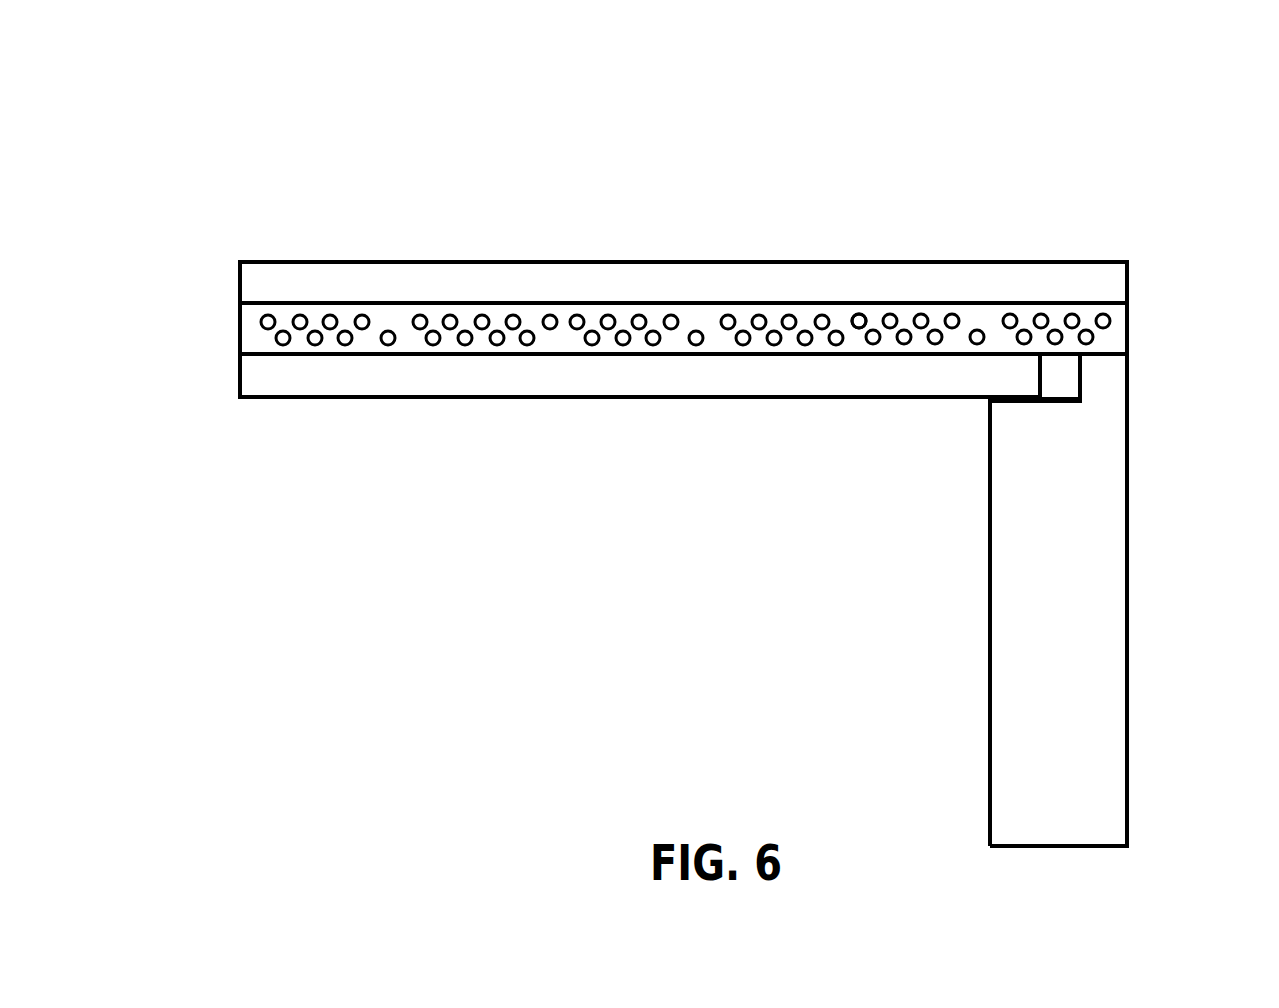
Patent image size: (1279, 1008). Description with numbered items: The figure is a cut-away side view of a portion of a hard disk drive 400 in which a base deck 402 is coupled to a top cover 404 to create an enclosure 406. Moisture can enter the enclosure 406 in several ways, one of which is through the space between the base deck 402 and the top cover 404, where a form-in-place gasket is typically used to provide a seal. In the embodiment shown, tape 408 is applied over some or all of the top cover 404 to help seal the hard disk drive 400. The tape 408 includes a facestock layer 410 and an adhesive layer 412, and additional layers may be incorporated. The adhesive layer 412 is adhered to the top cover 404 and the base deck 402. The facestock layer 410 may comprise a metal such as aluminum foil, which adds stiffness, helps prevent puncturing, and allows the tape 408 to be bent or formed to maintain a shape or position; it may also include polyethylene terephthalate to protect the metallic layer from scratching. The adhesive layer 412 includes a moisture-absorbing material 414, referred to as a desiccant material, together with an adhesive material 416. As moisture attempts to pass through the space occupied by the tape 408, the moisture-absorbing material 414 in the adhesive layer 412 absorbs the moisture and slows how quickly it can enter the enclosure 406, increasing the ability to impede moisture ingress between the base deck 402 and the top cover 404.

The hard disk drive 400 is at (212, 125).
The base deck 402 is at (1002, 583).
The top cover 404 is at (600, 380).
The enclosure 406 is at (832, 503).
The tape 408 is at (188, 328).
The facestock layer 410 is at (1118, 273).
The adhesive layer 412 is at (1128, 317).
The moisture-absorbing material 414 is at (860, 313).
The adhesive material 416 is at (938, 310).